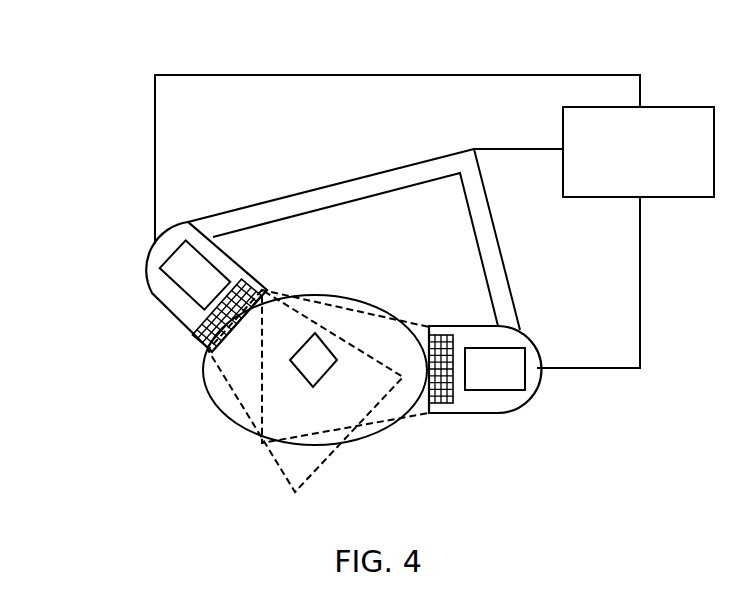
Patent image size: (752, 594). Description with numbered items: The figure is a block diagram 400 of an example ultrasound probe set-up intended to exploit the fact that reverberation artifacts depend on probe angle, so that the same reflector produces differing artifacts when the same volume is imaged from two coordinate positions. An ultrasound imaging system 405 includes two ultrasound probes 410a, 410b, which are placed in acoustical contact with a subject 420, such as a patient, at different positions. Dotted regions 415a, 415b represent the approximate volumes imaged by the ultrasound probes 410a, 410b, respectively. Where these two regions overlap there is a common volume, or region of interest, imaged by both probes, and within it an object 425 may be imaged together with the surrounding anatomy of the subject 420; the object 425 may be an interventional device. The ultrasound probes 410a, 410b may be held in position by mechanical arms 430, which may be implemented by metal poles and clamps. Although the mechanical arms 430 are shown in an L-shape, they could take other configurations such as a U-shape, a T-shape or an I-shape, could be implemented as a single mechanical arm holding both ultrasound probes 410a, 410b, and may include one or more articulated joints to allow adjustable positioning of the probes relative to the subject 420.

The block diagram 400 is at (92, 75).
The ultrasound imaging system 405 is at (623, 186).
The ultrasound probe 410a is at (150, 291).
The ultrasound probe 410b is at (528, 397).
The dotted region 415a is at (281, 470).
The dotted region 415b is at (373, 426).
The subject 420 is at (370, 302).
The object 425 is at (300, 373).
The mechanical arms 430 is at (316, 186).